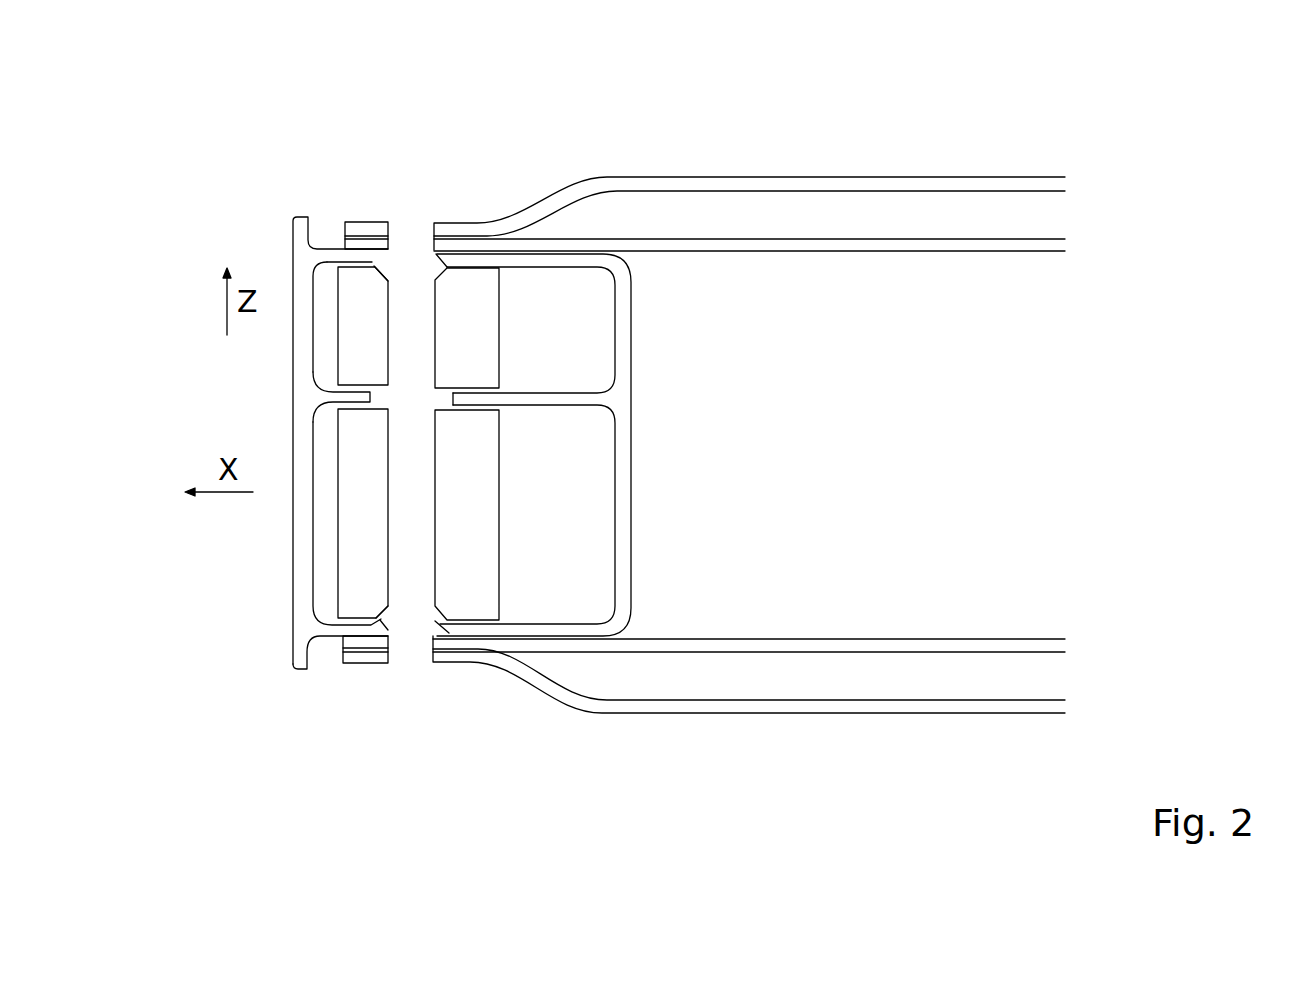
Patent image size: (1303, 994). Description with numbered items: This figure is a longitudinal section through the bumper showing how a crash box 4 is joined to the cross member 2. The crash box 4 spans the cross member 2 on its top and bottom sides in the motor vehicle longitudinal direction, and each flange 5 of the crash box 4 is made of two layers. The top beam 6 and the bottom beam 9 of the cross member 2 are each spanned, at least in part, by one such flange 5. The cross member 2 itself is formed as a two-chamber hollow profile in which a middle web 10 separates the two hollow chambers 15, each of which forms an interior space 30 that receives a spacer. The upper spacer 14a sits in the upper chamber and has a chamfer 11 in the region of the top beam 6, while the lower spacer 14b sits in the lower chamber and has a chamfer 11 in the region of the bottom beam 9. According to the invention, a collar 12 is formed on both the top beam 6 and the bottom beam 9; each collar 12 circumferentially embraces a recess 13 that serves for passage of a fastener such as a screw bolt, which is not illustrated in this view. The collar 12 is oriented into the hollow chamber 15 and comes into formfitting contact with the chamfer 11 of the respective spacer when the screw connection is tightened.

The cross member 2 is at (632, 443).
The crash box 4 is at (1027, 126).
The flange 5 is at (463, 217).
The top beam 6 is at (335, 244).
The bottom beam 9 is at (315, 648).
The middle web 10 is at (528, 407).
The chamfer 11 is at (390, 273).
The collar 12 is at (381, 256).
The recess 13 is at (426, 310).
The upper spacer 14a is at (492, 340).
The lower spacer 14b is at (492, 538).
The hollow chamber 15 is at (604, 305).
The interior space 30 is at (424, 453).